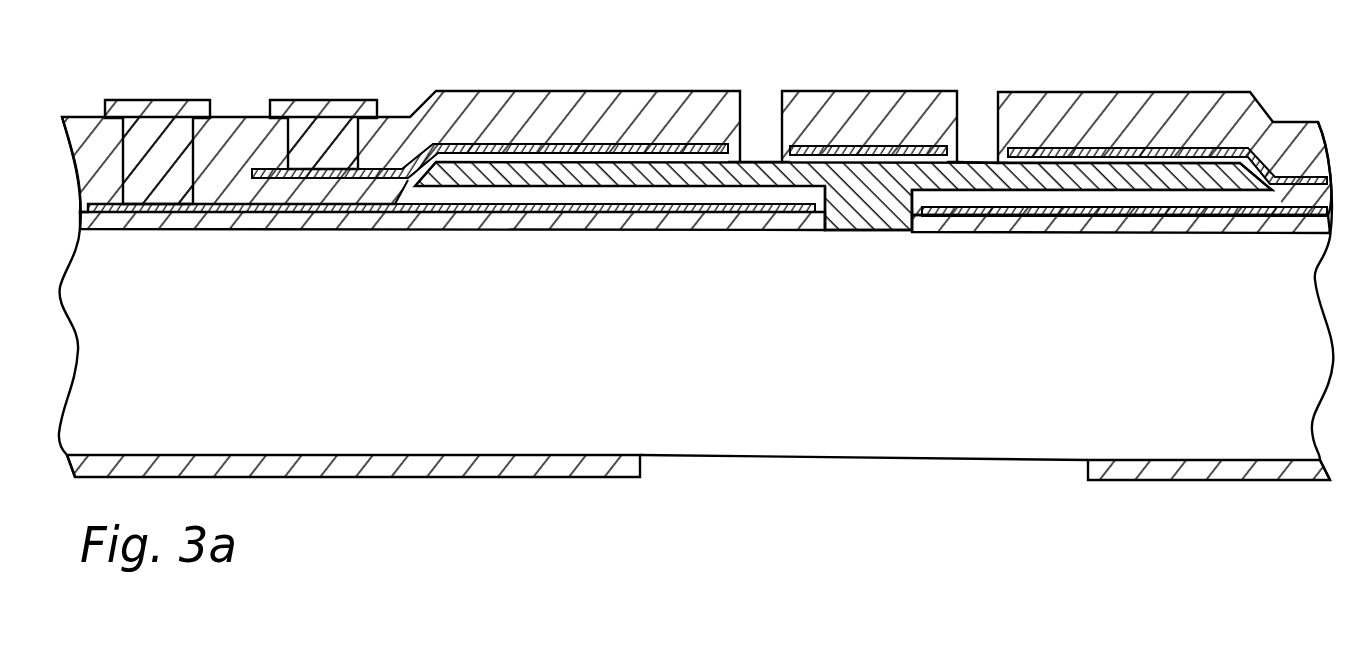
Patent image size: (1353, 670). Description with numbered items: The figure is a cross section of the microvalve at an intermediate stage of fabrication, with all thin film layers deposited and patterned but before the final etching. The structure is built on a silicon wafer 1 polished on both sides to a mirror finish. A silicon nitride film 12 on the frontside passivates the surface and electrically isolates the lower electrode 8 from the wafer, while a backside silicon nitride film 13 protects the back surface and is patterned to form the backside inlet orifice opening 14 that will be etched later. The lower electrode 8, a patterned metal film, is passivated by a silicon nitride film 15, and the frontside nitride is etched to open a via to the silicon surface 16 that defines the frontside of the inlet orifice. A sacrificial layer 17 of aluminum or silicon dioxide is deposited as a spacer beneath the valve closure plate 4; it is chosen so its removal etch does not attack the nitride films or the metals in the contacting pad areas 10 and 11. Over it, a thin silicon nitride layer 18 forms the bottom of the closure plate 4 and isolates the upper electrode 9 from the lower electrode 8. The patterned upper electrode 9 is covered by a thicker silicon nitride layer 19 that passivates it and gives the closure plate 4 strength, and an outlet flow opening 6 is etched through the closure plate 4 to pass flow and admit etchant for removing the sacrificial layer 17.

The silicon wafer 1 is at (76, 353).
The valve closure plate 4 is at (665, 80).
The outlet flow opening 6 is at (982, 78).
The lower electrode 8 is at (636, 232).
The upper electrode 9 is at (468, 144).
The contacting pad area 10 is at (157, 100).
The contacting pad area 11 is at (287, 100).
The silicon nitride film 12 is at (302, 231).
The backside silicon nitride film 13 is at (372, 478).
The backside inlet orifice opening 14 is at (780, 460).
The silicon nitride film 15 is at (462, 221).
The via to the silicon surface 16 is at (870, 263).
The sacrificial layer 17 is at (1032, 203).
The silicon nitride layer 18 is at (1140, 182).
The silicon nitride layer 19 is at (741, 118).